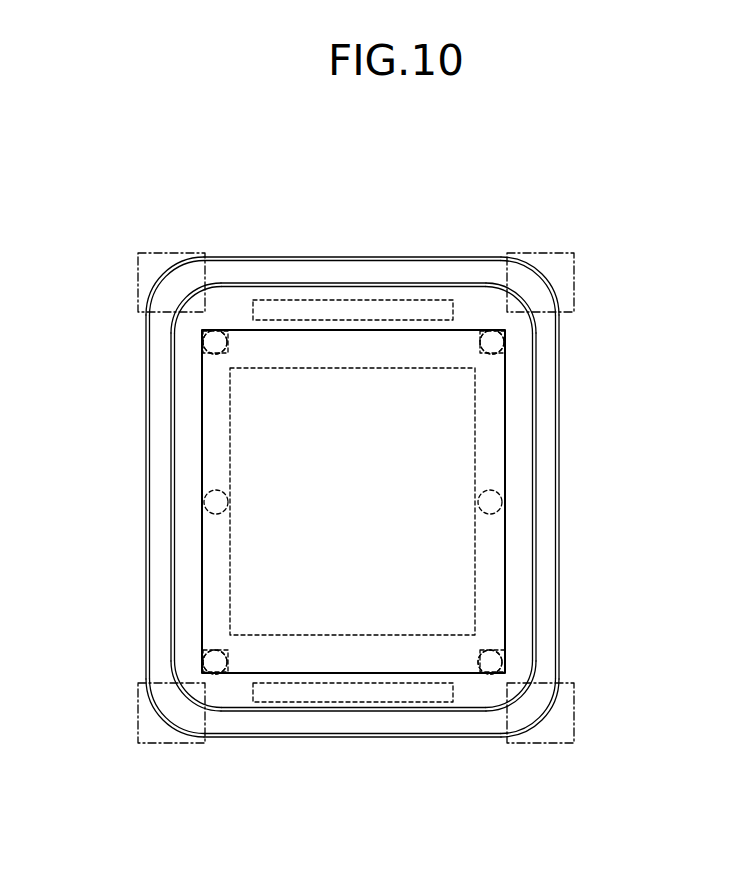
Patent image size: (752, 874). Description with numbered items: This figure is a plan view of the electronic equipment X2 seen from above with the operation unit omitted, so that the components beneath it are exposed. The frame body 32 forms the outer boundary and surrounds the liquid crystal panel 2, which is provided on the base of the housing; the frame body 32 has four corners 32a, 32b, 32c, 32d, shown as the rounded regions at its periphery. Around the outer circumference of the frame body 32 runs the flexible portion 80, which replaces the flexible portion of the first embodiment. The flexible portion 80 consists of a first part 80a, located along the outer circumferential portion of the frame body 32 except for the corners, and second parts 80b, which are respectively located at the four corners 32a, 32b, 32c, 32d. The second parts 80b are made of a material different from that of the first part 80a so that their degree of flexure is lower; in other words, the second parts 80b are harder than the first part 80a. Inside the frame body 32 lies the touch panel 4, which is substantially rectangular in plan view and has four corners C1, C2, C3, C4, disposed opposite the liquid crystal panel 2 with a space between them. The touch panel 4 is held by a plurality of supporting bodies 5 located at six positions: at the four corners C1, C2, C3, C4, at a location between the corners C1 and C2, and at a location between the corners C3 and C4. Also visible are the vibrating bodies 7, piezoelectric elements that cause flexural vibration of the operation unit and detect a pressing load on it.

The electronic equipment X2 is at (570, 167).
The liquid crystal panel 2 is at (452, 562).
The touch panel 4 is at (492, 424).
The supporting body 5 is at (205, 352).
The vibrating body 7 is at (350, 300).
The frame body 32 is at (381, 498).
The corner of frame body 32a is at (172, 253).
The corner of frame body 32b is at (168, 745).
The corner of frame body 32c is at (540, 253).
The corner of frame body 32d is at (535, 745).
The flexible portion 80 is at (381, 498).
The first part 80a is at (420, 283).
The second parts 80b is at (178, 292).
The corner of touch panel C1 is at (215, 332).
The corner of touch panel C2 is at (212, 650).
The corner of touch panel C3 is at (492, 332).
The corner of touch panel C4 is at (495, 648).